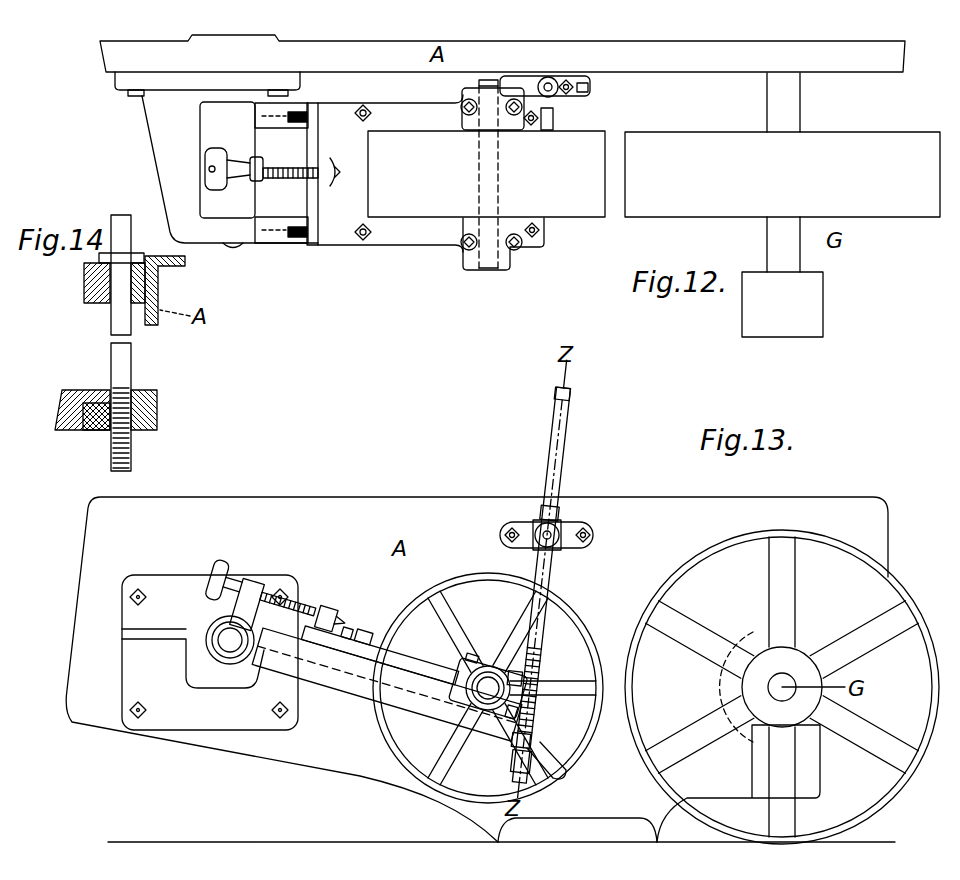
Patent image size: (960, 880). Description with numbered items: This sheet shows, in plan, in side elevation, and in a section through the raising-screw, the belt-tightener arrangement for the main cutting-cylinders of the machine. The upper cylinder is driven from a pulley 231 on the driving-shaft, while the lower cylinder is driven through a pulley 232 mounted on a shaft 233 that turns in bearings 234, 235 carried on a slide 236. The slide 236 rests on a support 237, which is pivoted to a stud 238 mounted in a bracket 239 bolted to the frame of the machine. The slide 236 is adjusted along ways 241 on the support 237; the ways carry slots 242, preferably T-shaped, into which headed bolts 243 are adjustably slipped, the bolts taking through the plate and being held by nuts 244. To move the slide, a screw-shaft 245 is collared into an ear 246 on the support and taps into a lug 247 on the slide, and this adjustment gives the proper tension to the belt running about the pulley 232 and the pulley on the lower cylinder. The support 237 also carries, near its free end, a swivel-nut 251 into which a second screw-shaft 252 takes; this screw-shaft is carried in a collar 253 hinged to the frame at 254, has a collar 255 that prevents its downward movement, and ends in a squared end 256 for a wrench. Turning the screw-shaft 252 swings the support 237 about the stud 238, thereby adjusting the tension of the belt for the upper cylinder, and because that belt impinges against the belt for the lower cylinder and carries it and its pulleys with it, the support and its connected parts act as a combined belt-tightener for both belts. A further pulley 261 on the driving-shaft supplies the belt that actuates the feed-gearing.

In FIG. 12, the pulley 231 is at (782, 172).
In FIG. 13, the pulley 231 is at (681, 565).
In FIG. 12, the pulley 232 is at (486, 174).
In FIG. 13, the pulley 232 is at (598, 613).
In FIG. 12, the shaft 233 is at (489, 270).
In FIG. 13, the shaft 233 is at (488, 666).
In FIG. 12, the bearing 234 is at (464, 262).
In FIG. 13, the bearing 234 is at (457, 667).
In FIG. 12, the bearing 235 is at (468, 93).
In FIG. 12, the slide 236 is at (335, 174).
In FIG. 13, the slide 236 is at (343, 628).
In FIG. 12, the support 237 is at (253, 160).
In FIG. 13, the support 237 is at (340, 694).
In FIG. 14, the support 237 is at (66, 432).
In FIG. 12, the stud 238 is at (235, 249).
In FIG. 13, the stud 238 is at (228, 636).
In FIG. 12, the bracket 239 is at (160, 117).
In FIG. 13, the bracket 239 is at (210, 652).
In FIG. 12, the ways 241 is at (297, 124).
In FIG. 13, the ways 241 is at (365, 640).
In FIG. 12, the slots 242 is at (302, 110).
In FIG. 12, the headed bolts 243 is at (371, 111).
In FIG. 13, the headed bolts 243 is at (370, 640).
In FIG. 12, the nuts 244 is at (363, 105).
In FIG. 13, the nuts 244 is at (350, 628).
In FIG. 12, the screw-shaft 245 is at (291, 168).
In FIG. 13, the screw-shaft 245 is at (297, 592).
In FIG. 12, the ear 246 is at (257, 177).
In FIG. 13, the ear 246 is at (253, 570).
In FIG. 12, the lug 247 is at (333, 182).
In FIG. 13, the lug 247 is at (323, 608).
In FIG. 13, the swivel-nut 251 is at (514, 765).
In FIG. 14, the swivel-nut 251 is at (148, 432).
In FIG. 12, the screw-shaft 252 is at (578, 76).
In FIG. 13, the screw-shaft 252 is at (550, 460).
In FIG. 14, the screw-shaft 252 is at (135, 362).
In FIG. 13, the collar 253 is at (540, 548).
In FIG. 14, the collar 253 is at (98, 308).
In FIG. 13, the hinge 254 is at (500, 540).
In FIG. 14, the hinge 254 is at (84, 290).
In FIG. 12, the collar 255 is at (548, 77).
In FIG. 13, the collar 255 is at (562, 517).
In FIG. 14, the collar 255 is at (136, 258).
In FIG. 13, the squared end 256 is at (557, 394).
In FIG. 12, the pulley 261 is at (782, 304).